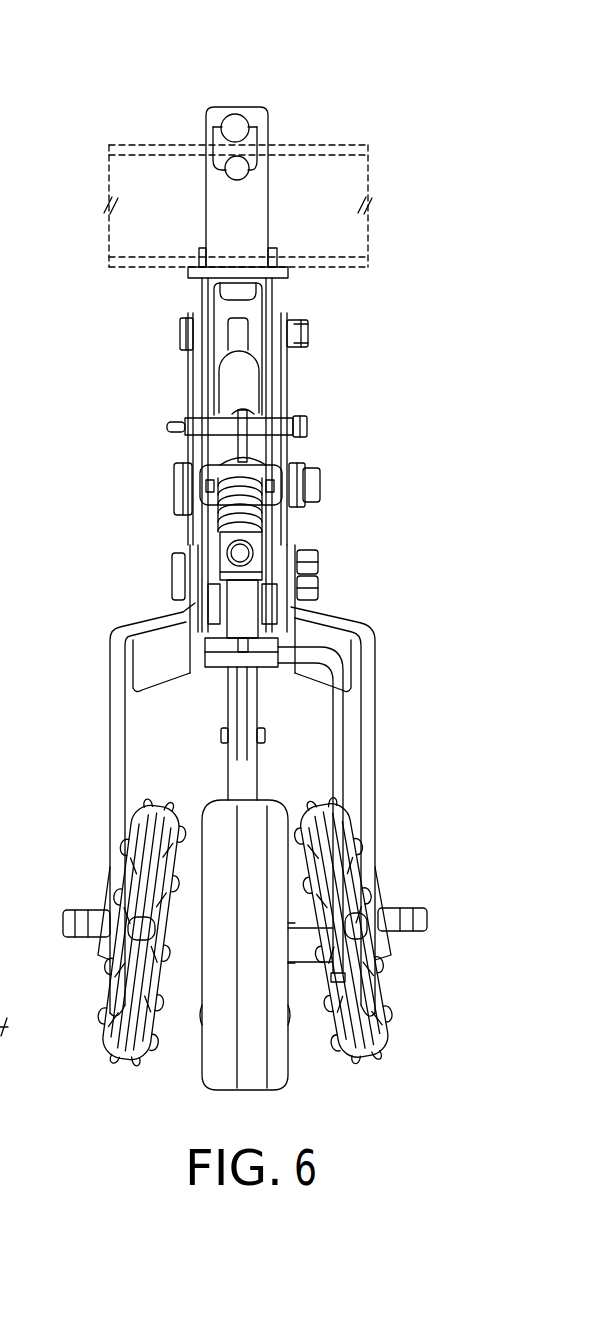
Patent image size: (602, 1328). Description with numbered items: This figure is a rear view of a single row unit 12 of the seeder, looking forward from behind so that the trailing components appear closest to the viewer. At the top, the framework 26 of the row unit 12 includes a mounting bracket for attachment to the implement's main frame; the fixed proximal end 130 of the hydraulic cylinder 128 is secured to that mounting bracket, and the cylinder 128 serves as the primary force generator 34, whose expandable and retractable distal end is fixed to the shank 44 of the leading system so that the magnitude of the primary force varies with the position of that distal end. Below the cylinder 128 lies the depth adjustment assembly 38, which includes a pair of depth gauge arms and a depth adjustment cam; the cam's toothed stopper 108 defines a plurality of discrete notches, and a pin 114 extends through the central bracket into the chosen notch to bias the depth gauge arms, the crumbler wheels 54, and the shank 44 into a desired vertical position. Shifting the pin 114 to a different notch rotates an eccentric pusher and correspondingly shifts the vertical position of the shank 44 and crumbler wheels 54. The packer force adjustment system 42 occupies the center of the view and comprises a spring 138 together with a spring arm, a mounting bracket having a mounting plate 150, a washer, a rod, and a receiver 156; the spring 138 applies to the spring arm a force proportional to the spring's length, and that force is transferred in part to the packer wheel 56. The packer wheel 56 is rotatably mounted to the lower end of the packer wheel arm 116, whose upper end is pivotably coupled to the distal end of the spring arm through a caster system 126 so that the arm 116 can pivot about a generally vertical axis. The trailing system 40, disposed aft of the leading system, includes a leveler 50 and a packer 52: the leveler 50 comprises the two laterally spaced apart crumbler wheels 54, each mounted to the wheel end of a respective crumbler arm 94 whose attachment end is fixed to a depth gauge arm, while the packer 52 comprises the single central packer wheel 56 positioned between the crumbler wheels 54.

The row unit 12 is at (376, 80).
The framework 26 is at (294, 297).
The primary force generator 34 is at (247, 388).
The proximal end 130 is at (240, 335).
The hydraulic cylinder 128 is at (250, 372).
The toothed stopper 108 is at (240, 430).
The depth adjustment assembly 38 is at (247, 443).
The pin 114 is at (182, 427).
The mounting plate 150 is at (182, 492).
The spring 138 is at (263, 492).
The packer force adjustment system 42 is at (267, 520).
The receiver 156 is at (258, 540).
The caster system 126 is at (264, 610).
The packer wheel arm 116 is at (337, 743).
The shank 44 is at (220, 767).
The crumbler arm 94 is at (372, 753).
The crumbler wheel 54 is at (105, 1018).
The packer wheel 56 is at (272, 1082).
The leveler 50 is at (110, 1080).
The trailing system 40 is at (163, 1103).
The packer 52 is at (245, 1102).